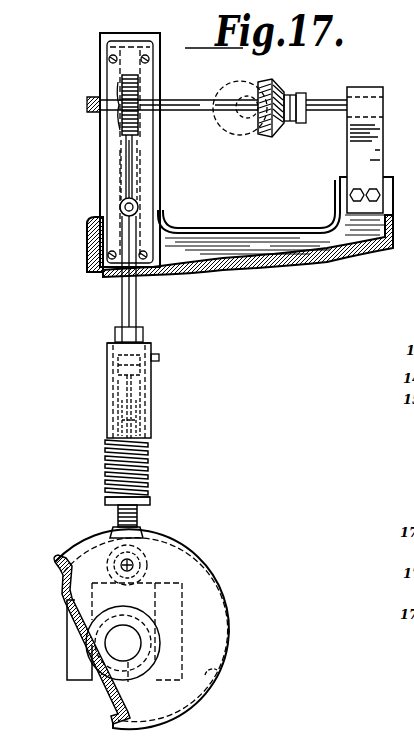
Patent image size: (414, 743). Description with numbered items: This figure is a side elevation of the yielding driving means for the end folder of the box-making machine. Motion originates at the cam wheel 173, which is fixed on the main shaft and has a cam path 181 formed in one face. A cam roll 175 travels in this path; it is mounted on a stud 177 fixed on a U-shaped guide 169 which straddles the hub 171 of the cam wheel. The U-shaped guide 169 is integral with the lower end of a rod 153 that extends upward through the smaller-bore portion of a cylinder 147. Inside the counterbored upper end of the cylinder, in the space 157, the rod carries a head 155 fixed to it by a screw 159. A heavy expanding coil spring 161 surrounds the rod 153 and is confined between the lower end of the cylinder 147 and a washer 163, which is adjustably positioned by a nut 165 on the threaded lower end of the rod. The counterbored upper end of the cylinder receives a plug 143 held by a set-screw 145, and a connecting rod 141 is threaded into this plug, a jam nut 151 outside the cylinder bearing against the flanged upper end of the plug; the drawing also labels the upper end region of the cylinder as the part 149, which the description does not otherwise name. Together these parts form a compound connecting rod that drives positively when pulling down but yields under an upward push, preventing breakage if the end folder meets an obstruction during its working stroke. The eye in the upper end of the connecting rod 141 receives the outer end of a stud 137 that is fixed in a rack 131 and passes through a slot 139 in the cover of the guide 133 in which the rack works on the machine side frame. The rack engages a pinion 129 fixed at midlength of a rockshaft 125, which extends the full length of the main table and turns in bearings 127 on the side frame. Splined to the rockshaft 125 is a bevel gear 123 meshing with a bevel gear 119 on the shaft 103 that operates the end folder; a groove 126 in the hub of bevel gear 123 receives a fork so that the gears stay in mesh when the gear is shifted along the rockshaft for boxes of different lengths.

The shaft 103 is at (238, 130).
The bevel gear 119 is at (258, 140).
The bevel gear 123 is at (280, 137).
The rockshaft 125 is at (328, 84).
The groove 126 is at (288, 121).
The bearings 127 is at (384, 95).
The pinion 129 is at (140, 100).
The rack 131 is at (120, 76).
The guide 133 is at (130, 82).
The stud 137 is at (138, 207).
The slot 139 is at (135, 180).
The connecting rod 141 is at (121, 312).
The plug 143 is at (140, 378).
The set-screw 145 is at (159, 358).
The cylinder 147 is at (107, 385).
The cylinder head 149 is at (107, 345).
The jam nut 151 is at (143, 335).
The rod 153 is at (137, 519).
The head 155 is at (135, 400).
The space 157 is at (120, 388).
The screw 159 is at (122, 420).
The coil spring 161 is at (148, 463).
The washer 163 is at (150, 497).
The nut 165 is at (110, 505).
The U-shaped guide 169 is at (67, 670).
The hub 171 is at (118, 700).
The cam wheel 173 is at (231, 622).
The cam roll 175 is at (115, 568).
The stud 177 is at (150, 568).
The cam path 181 is at (215, 672).